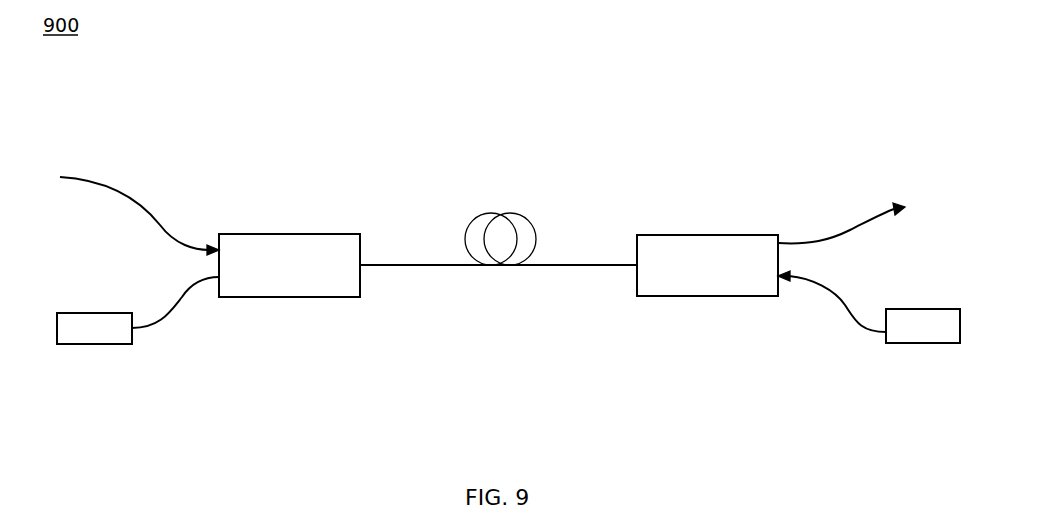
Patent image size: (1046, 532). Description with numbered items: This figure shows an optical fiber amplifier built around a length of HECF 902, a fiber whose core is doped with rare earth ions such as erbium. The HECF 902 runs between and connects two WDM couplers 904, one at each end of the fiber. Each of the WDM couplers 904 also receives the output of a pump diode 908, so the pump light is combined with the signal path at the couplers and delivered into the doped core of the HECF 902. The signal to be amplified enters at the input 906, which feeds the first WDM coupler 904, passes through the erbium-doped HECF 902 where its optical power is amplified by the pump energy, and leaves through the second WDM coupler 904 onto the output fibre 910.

The HECF 902 is at (498, 291).
The WDM couplers 904 is at (498, 221).
The input 906 is at (131, 171).
The pump diodes 908 is at (508, 354).
The fibre 910 is at (841, 184).